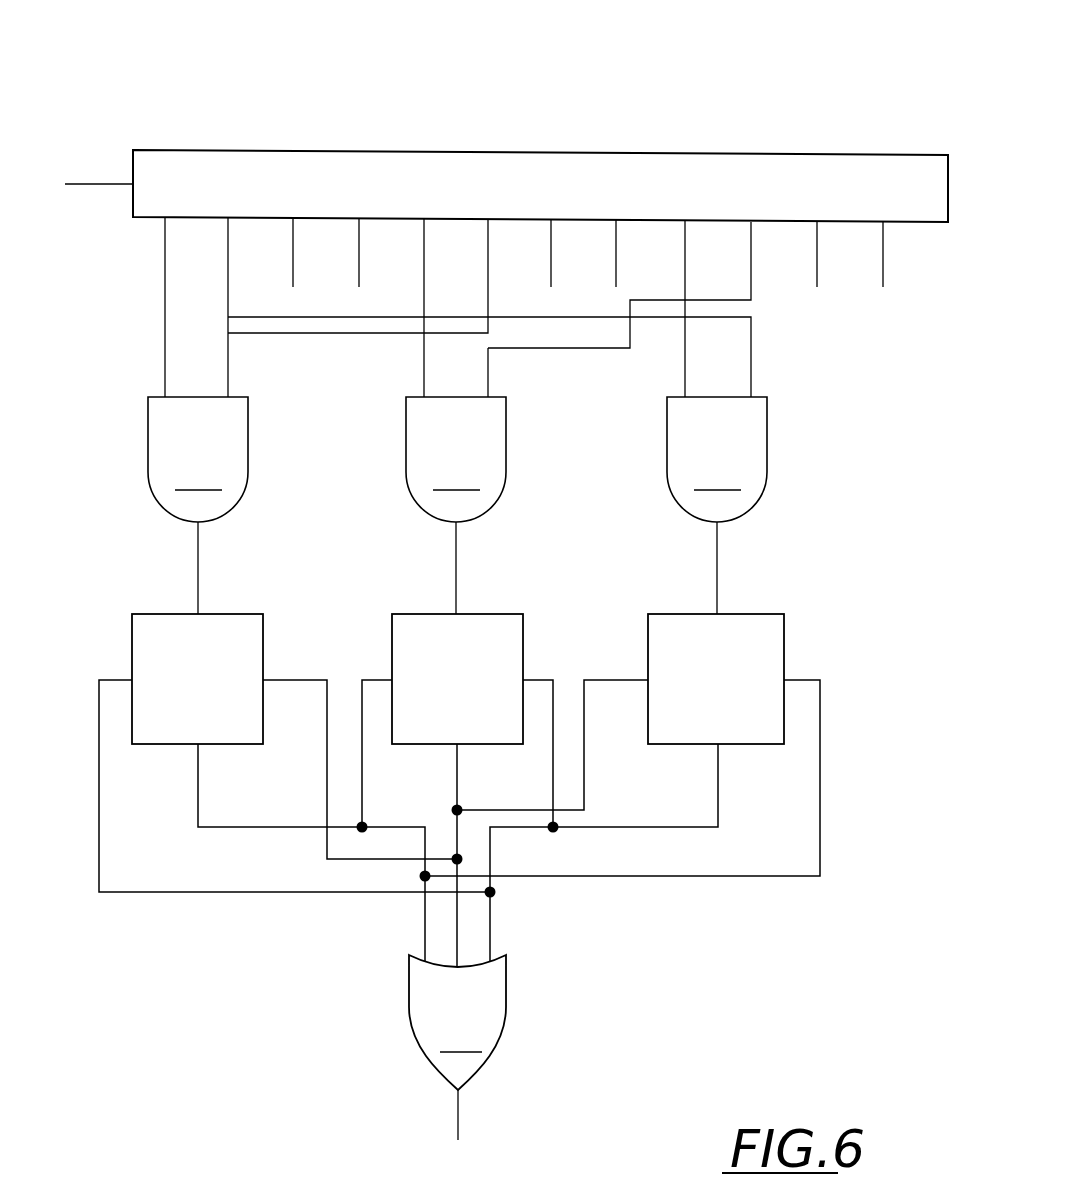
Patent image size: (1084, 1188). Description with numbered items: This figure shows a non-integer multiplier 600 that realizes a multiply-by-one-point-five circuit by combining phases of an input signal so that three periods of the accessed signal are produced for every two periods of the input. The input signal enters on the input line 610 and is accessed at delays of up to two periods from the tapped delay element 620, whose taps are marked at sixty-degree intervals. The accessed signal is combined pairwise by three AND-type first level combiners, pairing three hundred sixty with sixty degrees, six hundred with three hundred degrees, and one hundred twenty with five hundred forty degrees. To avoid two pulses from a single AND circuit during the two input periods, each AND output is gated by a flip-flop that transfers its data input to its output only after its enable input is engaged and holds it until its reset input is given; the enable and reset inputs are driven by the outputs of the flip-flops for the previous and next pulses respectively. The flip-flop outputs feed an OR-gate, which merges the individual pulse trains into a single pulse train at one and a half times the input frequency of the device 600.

The non-integer multiplier 600 is at (790, 139).
The input line 610 is at (76, 185).
The tapped delay line 620 is at (453, 150).